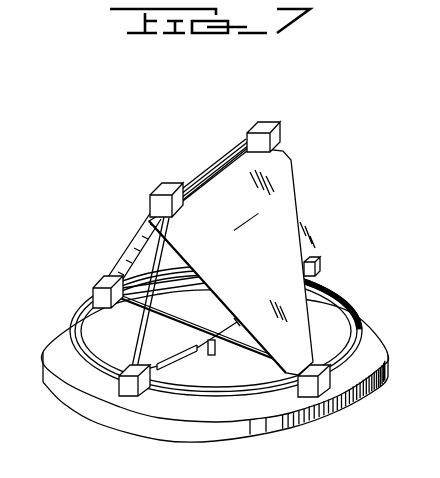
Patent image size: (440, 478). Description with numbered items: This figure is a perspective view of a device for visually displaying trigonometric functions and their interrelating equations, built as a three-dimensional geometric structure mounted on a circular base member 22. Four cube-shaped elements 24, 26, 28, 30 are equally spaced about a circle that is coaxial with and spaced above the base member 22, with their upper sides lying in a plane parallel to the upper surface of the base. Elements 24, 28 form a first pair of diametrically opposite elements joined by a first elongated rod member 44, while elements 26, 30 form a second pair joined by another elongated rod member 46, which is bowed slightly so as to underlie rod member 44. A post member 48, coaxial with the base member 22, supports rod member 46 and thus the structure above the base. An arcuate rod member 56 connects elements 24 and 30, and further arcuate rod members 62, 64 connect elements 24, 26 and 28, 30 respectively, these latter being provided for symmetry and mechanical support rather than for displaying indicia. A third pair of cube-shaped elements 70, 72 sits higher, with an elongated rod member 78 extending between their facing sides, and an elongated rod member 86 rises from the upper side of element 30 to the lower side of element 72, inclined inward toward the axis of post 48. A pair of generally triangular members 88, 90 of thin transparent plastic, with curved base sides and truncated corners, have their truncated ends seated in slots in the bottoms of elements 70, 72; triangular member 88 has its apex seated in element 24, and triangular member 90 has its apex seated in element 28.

The circular base member 22 is at (382, 330).
The cube-shaped element 24 is at (105, 277).
The cube-shaped element 26 is at (312, 259).
The cube-shaped element 28 is at (366, 397).
The cube-shaped element 30 is at (133, 397).
The first elongated rod member 44 is at (173, 319).
The elongated rod member 46 is at (186, 356).
The post member 48 is at (224, 353).
The arcuate rod member 56 is at (52, 378).
The arcuate rod member 62 is at (192, 279).
The arcuate rod member 64 is at (346, 289).
The cube-shaped element 70 is at (272, 123).
The cube-shaped element 72 is at (163, 184).
The elongated rod member 78 is at (219, 157).
The elongated rod member 86 is at (141, 327).
The triangular member 88 is at (140, 224).
The triangular member 90 is at (282, 165).